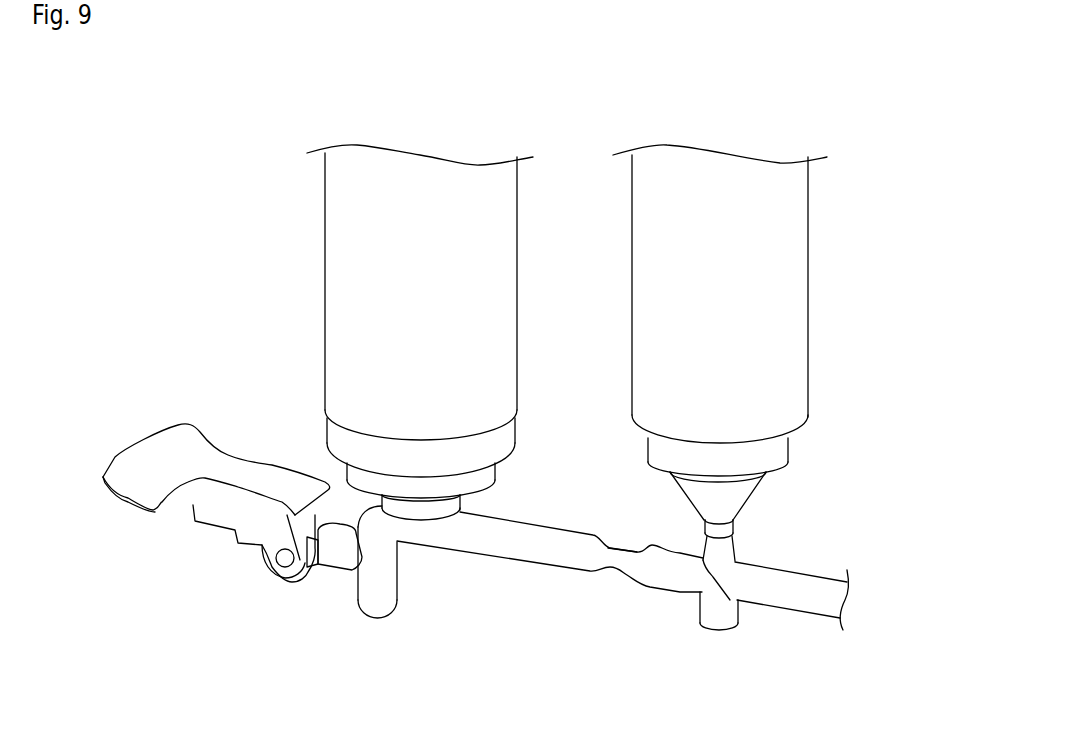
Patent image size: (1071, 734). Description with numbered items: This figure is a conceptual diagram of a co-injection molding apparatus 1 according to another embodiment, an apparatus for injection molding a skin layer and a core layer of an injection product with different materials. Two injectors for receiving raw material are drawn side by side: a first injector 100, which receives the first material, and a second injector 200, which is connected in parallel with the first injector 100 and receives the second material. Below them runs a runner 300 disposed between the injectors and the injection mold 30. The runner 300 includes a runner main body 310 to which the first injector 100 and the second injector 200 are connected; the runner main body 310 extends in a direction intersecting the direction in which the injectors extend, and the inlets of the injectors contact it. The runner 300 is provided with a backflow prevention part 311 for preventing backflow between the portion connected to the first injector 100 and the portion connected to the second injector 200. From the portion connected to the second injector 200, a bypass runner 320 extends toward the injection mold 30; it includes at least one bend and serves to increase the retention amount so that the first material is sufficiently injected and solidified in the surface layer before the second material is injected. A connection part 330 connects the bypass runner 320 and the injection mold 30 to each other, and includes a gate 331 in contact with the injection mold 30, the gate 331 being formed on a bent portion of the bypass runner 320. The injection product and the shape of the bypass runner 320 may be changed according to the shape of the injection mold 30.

The co-injection molding apparatus 1 is at (872, 240).
The first injector 100 is at (715, 130).
The second injector 200 is at (415, 122).
The injection mold 30 is at (92, 432).
The runner 300 is at (544, 596).
The runner main body 310 is at (552, 537).
The backflow prevention part 311 is at (618, 563).
The bypass runner 320 is at (380, 607).
The connection part 330 is at (345, 557).
The gate 331 is at (313, 572).